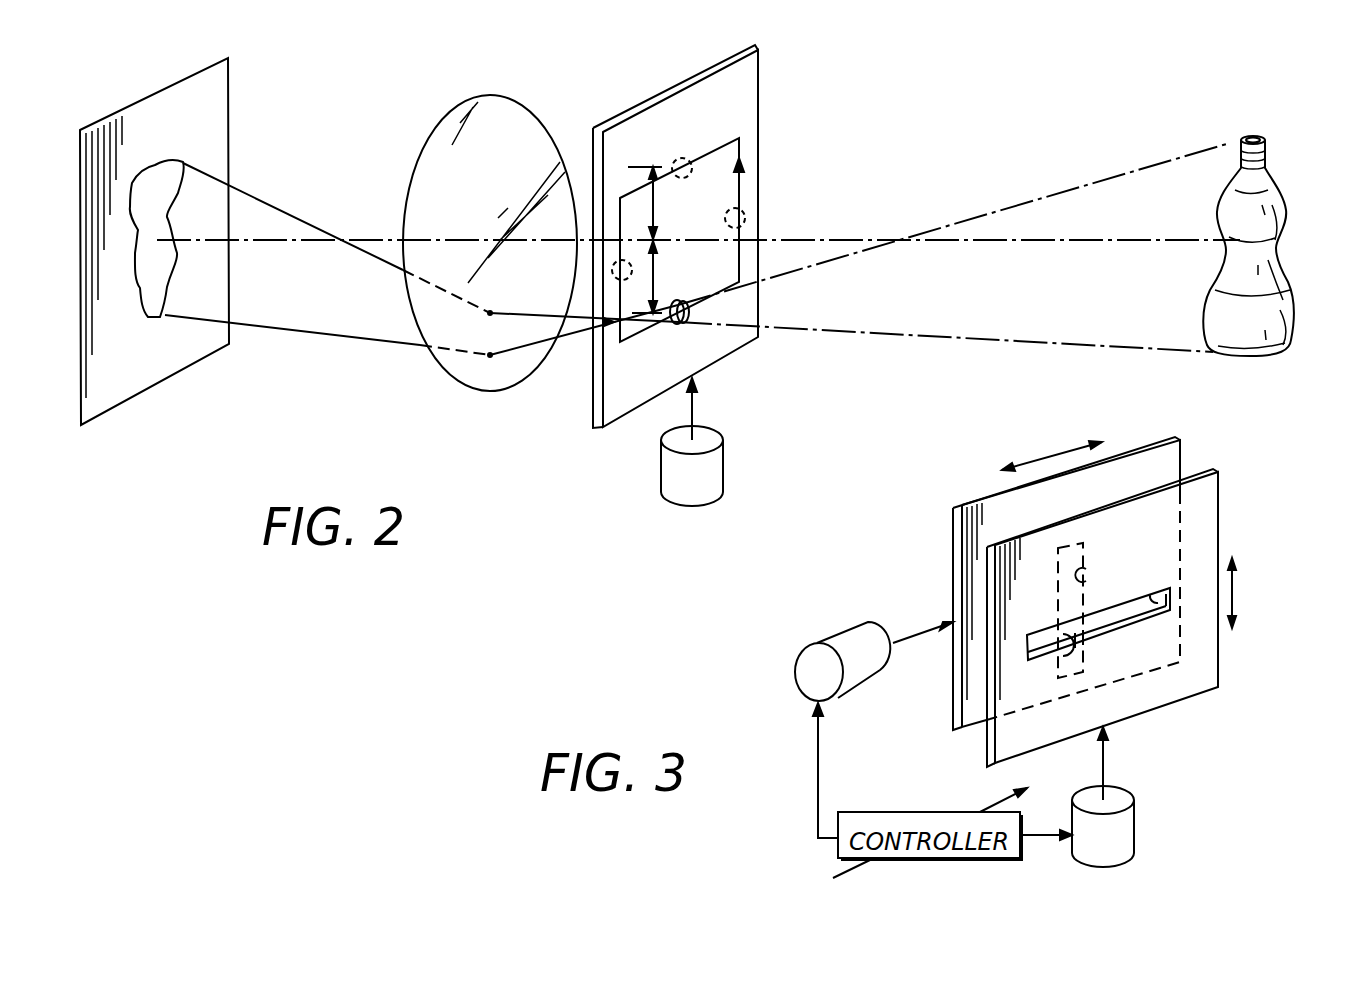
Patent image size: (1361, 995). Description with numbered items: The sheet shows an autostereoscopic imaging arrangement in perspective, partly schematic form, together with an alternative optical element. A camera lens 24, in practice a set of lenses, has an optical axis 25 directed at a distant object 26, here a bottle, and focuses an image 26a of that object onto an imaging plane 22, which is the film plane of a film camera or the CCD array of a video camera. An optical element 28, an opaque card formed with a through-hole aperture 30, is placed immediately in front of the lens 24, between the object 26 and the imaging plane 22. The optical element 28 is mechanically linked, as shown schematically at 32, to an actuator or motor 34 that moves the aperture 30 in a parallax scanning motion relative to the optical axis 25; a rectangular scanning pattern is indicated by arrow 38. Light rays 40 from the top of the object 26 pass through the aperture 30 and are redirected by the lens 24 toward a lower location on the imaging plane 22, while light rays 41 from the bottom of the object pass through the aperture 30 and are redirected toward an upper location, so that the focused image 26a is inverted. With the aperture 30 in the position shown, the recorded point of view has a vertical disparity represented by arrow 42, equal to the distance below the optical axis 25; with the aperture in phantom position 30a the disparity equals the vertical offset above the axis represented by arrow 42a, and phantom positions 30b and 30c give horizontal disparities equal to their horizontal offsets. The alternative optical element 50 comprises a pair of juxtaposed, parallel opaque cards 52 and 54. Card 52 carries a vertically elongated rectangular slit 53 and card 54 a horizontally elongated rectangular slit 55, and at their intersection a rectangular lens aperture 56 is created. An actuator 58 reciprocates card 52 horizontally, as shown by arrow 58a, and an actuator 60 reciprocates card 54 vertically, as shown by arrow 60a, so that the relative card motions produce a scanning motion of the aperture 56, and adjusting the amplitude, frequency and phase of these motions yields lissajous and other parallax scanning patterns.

In FIG. 2, the imaging plane 22 is at (210, 93).
In FIG. 2, the camera lens 24 is at (484, 387).
In FIG. 2, the optical axis 25 is at (808, 240).
In FIG. 2, the object 26 is at (1268, 180).
In FIG. 2, the image 26a is at (143, 283).
In FIG. 2, the optical element 28 is at (722, 115).
In FIG. 2, the aperture 30 is at (688, 312).
In FIG. 2, the phantom line position 30a is at (682, 158).
In FIG. 2, the phantom line position 30b is at (618, 281).
In FIG. 2, the phantom line position 30c is at (745, 212).
In FIG. 2, the mechanical link 32 is at (695, 405).
In FIG. 2, the motor 34 is at (712, 470).
In FIG. 2, the arrow 38 is at (632, 341).
In FIG. 2, the light rays 40 is at (1056, 184).
In FIG. 2, the light rays 41 is at (1027, 338).
In FIG. 2, the arrow 42 is at (658, 272).
In FIG. 2, the arrow 42a is at (660, 208).
In FIG. 3, the optical element 50 is at (1228, 445).
In FIG. 3, the opaque card 52 is at (965, 545).
In FIG. 3, the rectangular slit 53 is at (1087, 576).
In FIG. 3, the opaque card 54 is at (1205, 665).
In FIG. 3, the rectangular slit 55 is at (1170, 592).
In FIG. 3, the lens aperture 56 is at (1056, 655).
In FIG. 3, the actuator 58 is at (872, 668).
In FIG. 3, the arrow 58a is at (1048, 457).
In FIG. 3, the actuator 60 is at (1125, 846).
In FIG. 3, the arrow 60a is at (1230, 571).